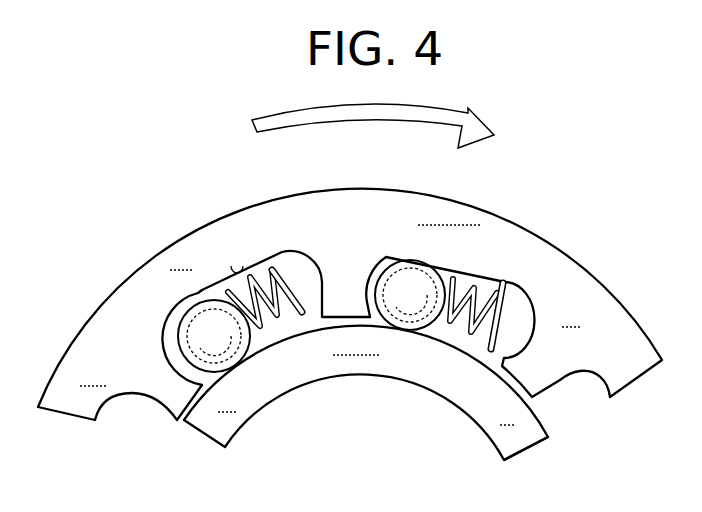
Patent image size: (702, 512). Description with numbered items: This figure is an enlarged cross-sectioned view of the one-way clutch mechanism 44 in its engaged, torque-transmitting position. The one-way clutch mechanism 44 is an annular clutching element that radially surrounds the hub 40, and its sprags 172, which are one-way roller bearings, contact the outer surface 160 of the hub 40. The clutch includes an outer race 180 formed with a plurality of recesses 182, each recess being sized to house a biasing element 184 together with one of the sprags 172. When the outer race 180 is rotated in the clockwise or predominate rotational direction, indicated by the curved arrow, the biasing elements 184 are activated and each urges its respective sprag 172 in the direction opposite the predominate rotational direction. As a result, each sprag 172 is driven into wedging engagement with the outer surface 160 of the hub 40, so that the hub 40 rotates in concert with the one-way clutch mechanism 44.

The hub 40 is at (492, 410).
The one-way clutch mechanism 44 is at (350, 285).
The outer surface of the hub 160 is at (545, 416).
The sprags 172 is at (200, 339).
The outer race 180 is at (207, 240).
The recesses 182 is at (237, 270).
The biasing element 184 is at (273, 320).